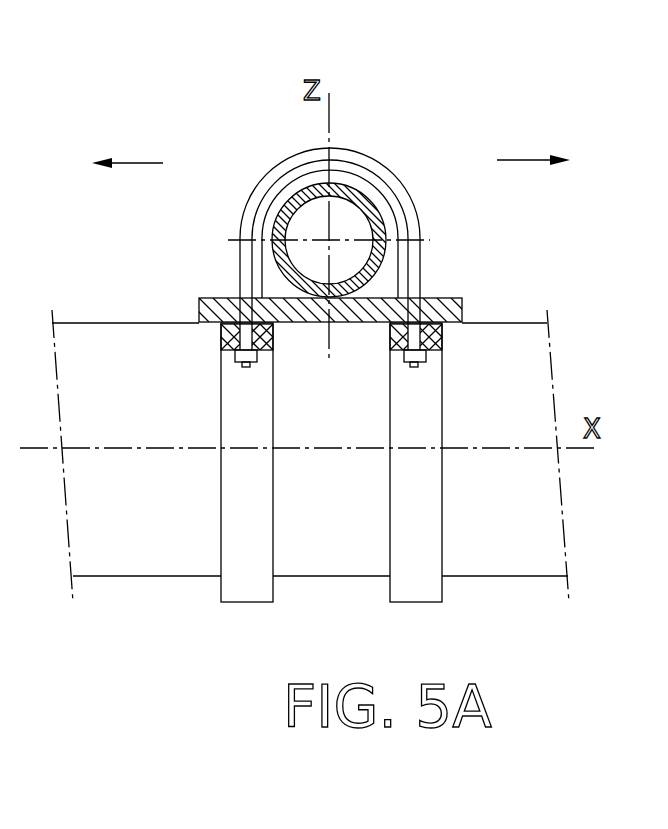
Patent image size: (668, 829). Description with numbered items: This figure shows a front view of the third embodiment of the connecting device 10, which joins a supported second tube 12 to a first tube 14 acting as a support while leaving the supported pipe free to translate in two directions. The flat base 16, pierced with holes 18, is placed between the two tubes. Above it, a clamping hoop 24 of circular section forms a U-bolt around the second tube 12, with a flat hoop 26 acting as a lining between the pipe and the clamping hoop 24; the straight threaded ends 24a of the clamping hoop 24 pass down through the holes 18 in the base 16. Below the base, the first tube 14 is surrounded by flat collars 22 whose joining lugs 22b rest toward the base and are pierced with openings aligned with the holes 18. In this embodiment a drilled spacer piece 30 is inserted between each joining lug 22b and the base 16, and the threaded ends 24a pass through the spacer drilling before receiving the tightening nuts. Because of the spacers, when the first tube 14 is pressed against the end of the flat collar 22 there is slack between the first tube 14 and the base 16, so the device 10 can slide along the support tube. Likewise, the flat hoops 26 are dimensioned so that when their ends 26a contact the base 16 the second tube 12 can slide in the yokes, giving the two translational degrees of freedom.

The connecting device 10 is at (327, 248).
The second tube 12 is at (370, 205).
The first tube 14 is at (472, 565).
The base 16 is at (193, 288).
The hole 18 is at (420, 293).
The flat collar 22 is at (236, 608).
The joining lug 22b is at (442, 333).
The clamping hoop 24 is at (338, 148).
The threaded end 24a is at (270, 350).
The flat hoop 26 is at (262, 192).
The end of flat hoop 26a is at (258, 278).
The drilled spacer piece 30 is at (220, 333).